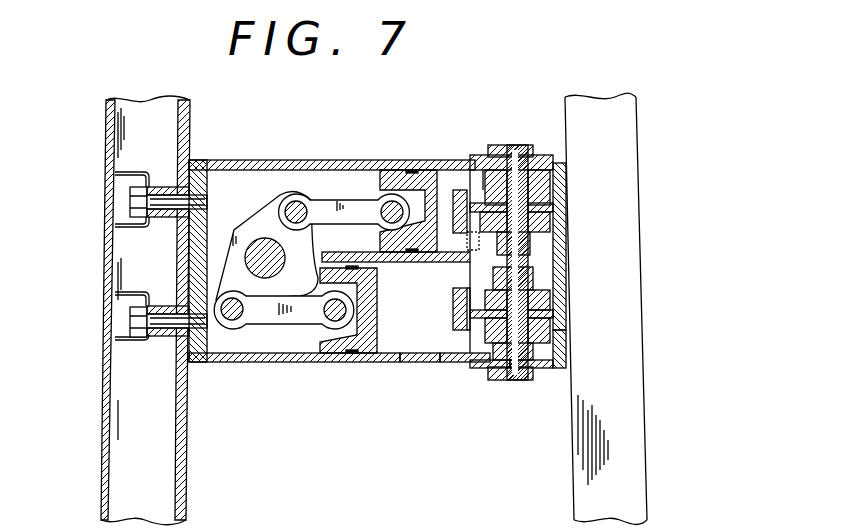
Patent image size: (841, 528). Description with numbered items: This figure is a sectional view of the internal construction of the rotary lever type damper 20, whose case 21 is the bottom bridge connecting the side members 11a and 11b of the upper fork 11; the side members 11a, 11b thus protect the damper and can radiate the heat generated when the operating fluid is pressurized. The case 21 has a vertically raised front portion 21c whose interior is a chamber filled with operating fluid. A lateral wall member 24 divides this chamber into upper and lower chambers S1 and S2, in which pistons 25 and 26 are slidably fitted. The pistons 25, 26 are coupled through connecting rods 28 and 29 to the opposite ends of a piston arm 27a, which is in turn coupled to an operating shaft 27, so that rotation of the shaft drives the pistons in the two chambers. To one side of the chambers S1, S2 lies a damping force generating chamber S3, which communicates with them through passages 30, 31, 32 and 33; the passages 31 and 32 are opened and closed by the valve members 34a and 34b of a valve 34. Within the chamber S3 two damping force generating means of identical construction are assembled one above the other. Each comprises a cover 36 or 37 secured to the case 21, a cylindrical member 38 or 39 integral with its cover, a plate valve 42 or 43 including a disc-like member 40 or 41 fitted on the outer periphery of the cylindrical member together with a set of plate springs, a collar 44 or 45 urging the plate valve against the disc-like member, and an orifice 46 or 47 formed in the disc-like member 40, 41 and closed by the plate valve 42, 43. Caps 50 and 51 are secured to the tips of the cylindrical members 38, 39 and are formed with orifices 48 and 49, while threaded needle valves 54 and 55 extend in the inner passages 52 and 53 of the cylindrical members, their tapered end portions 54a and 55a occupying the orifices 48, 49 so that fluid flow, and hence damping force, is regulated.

The upper fork 11 is at (104, 500).
The side member 11a is at (633, 493).
The side member 11b is at (103, 452).
The rotary lever type damper 20 is at (229, 380).
The case 21 is at (338, 163).
The vertically raised front portion 21c is at (232, 160).
The lateral wall member 24 is at (400, 262).
The piston 25 is at (330, 362).
The piston 26 is at (395, 176).
The operating shaft 27 is at (265, 278).
The piston arm 27a is at (264, 223).
The connecting rod 28 is at (300, 314).
The connecting rod 29 is at (321, 203).
The passage 30 is at (458, 345).
The passage 31 is at (438, 332).
The passage 32 is at (460, 203).
The passage 33 is at (448, 227).
The valve 34 is at (466, 331).
The valve member 34a is at (468, 309).
The valve member 34b is at (462, 190).
The cover 36 is at (490, 368).
The cover 37 is at (501, 145).
The cylindrical member 38 is at (560, 368).
The cylindrical member 39 is at (567, 165).
The disc-like member 40 is at (552, 324).
The disc-like member 41 is at (552, 230).
The plate valve 42 is at (545, 345).
The plate valve 43 is at (556, 186).
The collar 44 is at (547, 370).
The collar 45 is at (563, 168).
The orifice 46 is at (552, 310).
The orifice 47 is at (552, 216).
The orifice 48 is at (551, 290).
The orifice 49 is at (552, 268).
The cap 50 is at (552, 302).
The cap 51 is at (552, 243).
The inner passage 52 is at (558, 348).
The inner passage 53 is at (552, 197).
The threaded needle valve 54 is at (517, 382).
The tapered end portion 54a is at (552, 296).
The threaded needle valve 55 is at (521, 147).
The tapered end portion 55a is at (532, 250).
The upper chamber S1 is at (398, 338).
The lower chamber S2 is at (452, 162).
The damping force generating chamber S3 is at (479, 190).